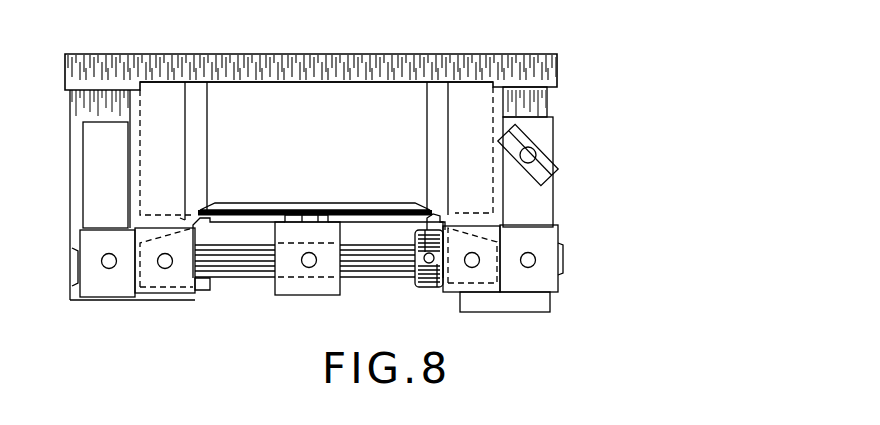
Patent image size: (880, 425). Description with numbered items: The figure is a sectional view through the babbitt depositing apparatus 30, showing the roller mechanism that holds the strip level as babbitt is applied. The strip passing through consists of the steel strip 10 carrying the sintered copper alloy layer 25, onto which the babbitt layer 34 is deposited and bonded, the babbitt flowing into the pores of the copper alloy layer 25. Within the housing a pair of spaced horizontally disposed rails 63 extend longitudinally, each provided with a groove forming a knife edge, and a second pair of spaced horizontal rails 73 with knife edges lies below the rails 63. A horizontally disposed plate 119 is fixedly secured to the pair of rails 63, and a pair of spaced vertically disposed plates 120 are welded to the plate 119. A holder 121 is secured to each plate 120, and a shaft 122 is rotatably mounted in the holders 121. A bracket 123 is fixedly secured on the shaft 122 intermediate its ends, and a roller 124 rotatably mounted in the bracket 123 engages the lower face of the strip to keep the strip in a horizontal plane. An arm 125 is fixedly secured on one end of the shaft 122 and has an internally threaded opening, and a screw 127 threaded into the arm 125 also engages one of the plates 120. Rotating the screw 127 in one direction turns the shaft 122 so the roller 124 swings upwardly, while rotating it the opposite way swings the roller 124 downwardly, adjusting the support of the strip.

The steel strip 10 is at (257, 216).
The sintered copper alloy layer 25 is at (275, 210).
The babbitt depositing apparatus 30 is at (418, 53).
The babbitt layer 34 is at (320, 203).
The rails 63 is at (198, 113).
The rails 73 is at (428, 226).
The plate 119 is at (325, 53).
The plates 120 is at (80, 130).
The holder 121 is at (462, 272).
The shaft 122 is at (245, 268).
The bracket 123 is at (312, 293).
The roller 124 is at (328, 218).
The arm 125 is at (533, 201).
The screw 127 is at (540, 167).